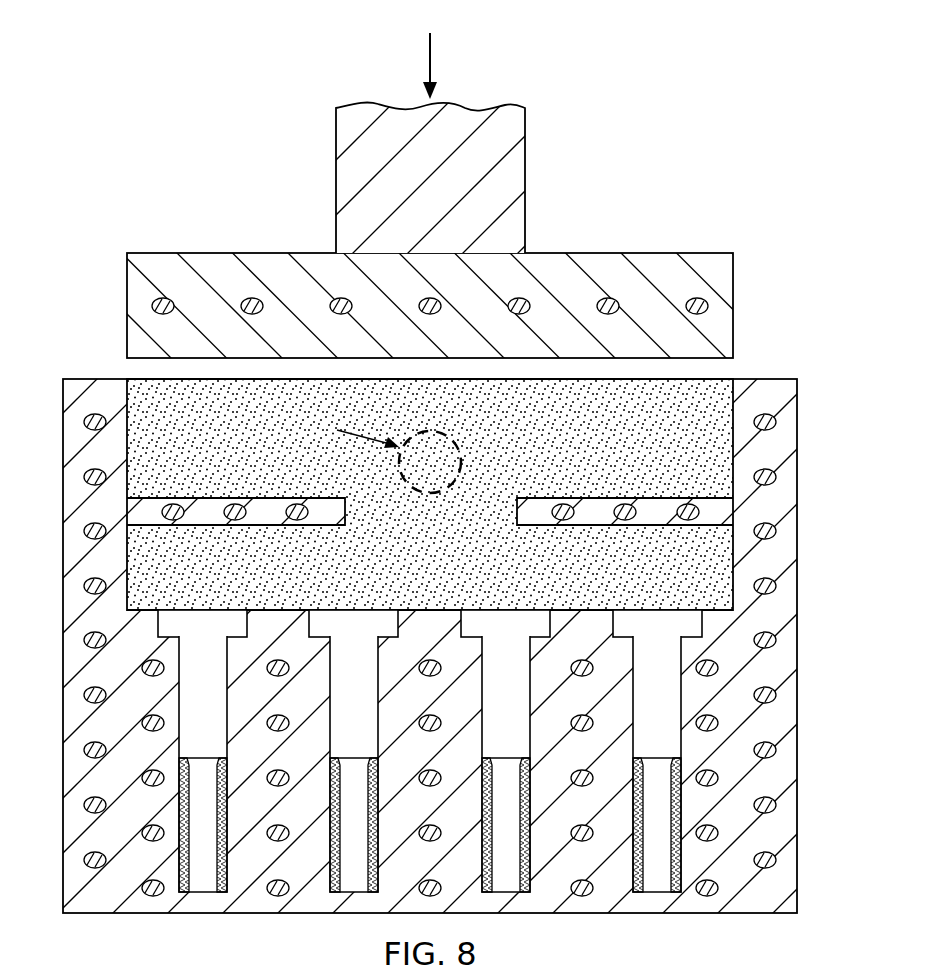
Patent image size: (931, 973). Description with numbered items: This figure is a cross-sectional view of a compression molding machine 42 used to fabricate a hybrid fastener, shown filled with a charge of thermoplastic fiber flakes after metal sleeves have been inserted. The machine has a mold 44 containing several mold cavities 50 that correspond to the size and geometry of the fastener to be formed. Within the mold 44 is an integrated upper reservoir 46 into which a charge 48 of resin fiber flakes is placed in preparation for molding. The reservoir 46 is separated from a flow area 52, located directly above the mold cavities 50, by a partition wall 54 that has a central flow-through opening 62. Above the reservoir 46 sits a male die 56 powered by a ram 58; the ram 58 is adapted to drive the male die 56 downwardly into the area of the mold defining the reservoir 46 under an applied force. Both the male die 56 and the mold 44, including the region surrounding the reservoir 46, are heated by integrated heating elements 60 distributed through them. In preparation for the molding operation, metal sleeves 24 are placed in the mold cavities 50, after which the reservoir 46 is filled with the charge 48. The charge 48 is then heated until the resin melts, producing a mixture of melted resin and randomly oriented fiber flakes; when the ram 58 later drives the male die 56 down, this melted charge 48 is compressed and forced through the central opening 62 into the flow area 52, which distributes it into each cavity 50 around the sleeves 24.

The compression molding machine 42 is at (465, 486).
The mold 44 is at (788, 817).
The upper reservoir 46 is at (137, 388).
The charge 48 is at (725, 385).
The mold cavities 50 is at (430, 751).
The flow area 52 is at (135, 601).
The partition wall 54 is at (212, 503).
The male die 56 is at (657, 263).
The ram 58 is at (343, 188).
The heating elements 60 is at (606, 300).
The central flow-through opening 62 is at (513, 513).
The metal sleeves 24 is at (430, 789).